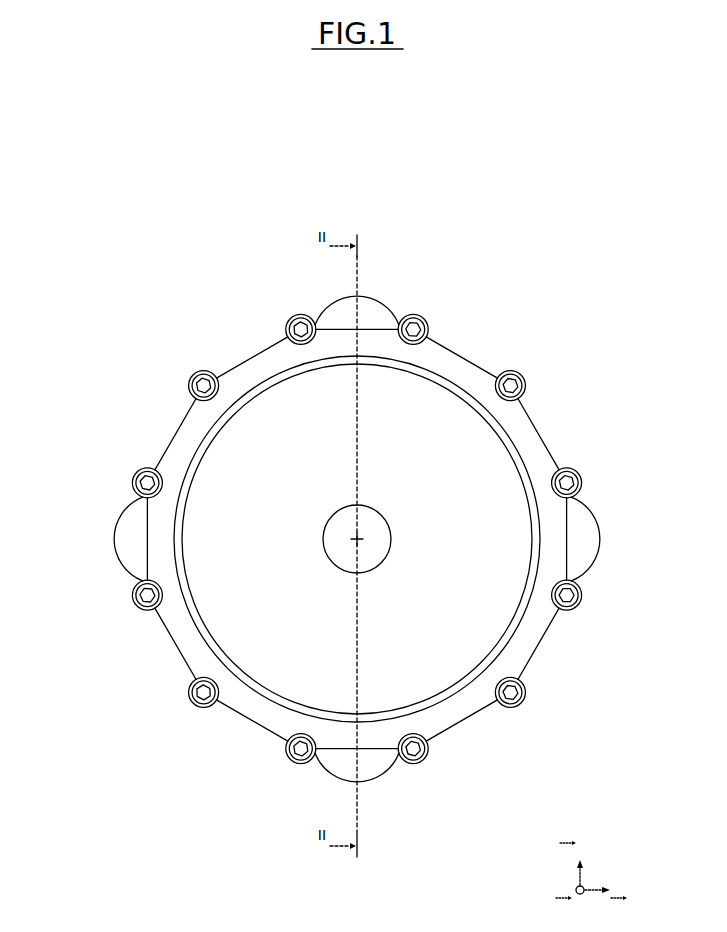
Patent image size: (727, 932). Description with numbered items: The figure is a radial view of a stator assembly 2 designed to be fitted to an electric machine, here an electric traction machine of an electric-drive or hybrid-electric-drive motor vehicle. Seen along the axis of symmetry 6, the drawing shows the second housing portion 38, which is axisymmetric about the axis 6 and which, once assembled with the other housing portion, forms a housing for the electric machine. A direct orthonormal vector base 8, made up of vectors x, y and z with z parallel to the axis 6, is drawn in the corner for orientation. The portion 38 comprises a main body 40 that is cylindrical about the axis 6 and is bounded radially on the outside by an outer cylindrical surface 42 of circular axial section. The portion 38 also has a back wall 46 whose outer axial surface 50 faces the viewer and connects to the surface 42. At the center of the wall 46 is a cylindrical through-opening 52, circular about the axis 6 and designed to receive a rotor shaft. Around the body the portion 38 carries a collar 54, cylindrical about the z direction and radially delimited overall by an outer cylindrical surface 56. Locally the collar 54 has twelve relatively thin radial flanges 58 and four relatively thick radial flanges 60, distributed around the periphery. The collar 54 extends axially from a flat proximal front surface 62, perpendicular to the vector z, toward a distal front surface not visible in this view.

The stator assembly 2 is at (184, 254).
The axis of symmetry 6 is at (356, 539).
The direct orthonormal vector base 8 is at (610, 845).
The second housing portion 38 is at (549, 645).
The main body 40 is at (268, 701).
The outer cylindrical surface 42 is at (222, 704).
The back wall 46 is at (450, 658).
The outer axial surface 50 is at (430, 636).
The cylindrical through-opening 52 is at (371, 520).
The collar 54 is at (179, 438).
The outer cylindrical surface 56 is at (462, 721).
The relatively thin radial flanges 58 is at (203, 371).
The relatively thick radial flanges 60 is at (386, 297).
The proximal front surface 62 is at (339, 313).